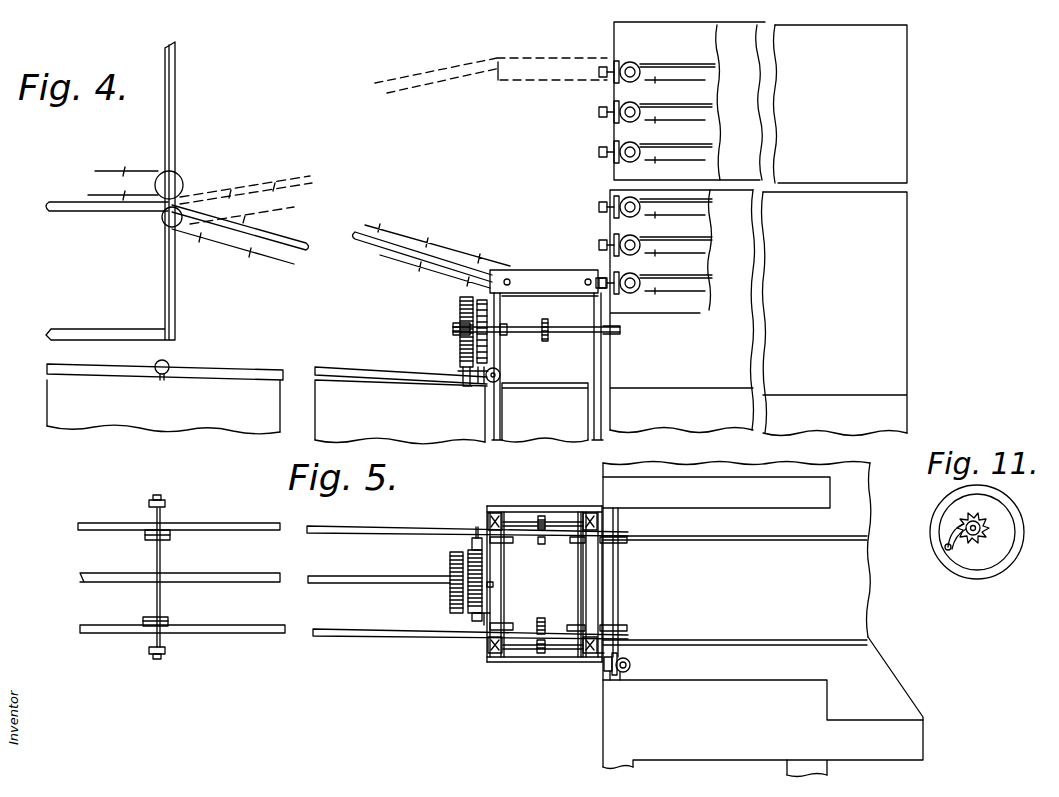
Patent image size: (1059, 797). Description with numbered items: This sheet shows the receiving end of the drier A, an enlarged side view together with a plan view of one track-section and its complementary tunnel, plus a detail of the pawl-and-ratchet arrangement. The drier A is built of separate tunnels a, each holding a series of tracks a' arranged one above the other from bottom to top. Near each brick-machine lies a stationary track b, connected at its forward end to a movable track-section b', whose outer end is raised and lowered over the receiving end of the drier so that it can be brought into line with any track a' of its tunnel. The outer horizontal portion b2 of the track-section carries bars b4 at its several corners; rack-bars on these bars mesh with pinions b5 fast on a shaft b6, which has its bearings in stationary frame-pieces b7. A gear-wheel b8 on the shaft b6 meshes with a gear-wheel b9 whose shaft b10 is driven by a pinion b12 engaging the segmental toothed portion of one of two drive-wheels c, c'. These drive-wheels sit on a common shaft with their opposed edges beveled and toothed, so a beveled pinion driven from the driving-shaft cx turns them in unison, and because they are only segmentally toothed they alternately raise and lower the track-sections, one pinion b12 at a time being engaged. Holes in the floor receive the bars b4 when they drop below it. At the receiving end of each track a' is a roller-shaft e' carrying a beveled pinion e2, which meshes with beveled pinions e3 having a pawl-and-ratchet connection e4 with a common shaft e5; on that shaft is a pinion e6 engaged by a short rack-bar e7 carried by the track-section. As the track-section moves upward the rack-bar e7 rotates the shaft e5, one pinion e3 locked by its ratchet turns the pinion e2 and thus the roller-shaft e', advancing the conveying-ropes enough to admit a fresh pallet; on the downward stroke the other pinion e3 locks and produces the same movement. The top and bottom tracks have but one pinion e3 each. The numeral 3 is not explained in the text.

In FIG. 4, the drier A is at (758, 219).
In FIG. 5, the drier A is at (763, 619).
In FIG. 4, the tunnel a is at (453, 395).
In FIG. 5, the track a' is at (735, 590).
In FIG. 4, the rod 3 is at (677, 95).
In FIG. 4, the stationary track b is at (107, 221).
In FIG. 4, the movable track-section b' is at (332, 243).
In FIG. 5, the movable track-section b' is at (189, 641).
In FIG. 4, the outer horizontal portion b2 is at (531, 277).
In FIG. 4, the bar b4 is at (503, 414).
In FIG. 5, the bar b4 is at (495, 652).
In FIG. 5, the pinion b5 is at (580, 645).
In FIG. 4, the shaft b6 is at (518, 333).
In FIG. 5, the shaft b6 is at (558, 512).
In FIG. 4, the stationary frame-piece b7 is at (612, 331).
In FIG. 5, the stationary frame-piece b7 is at (488, 648).
In FIG. 4, the gear-wheel b8 is at (545, 342).
In FIG. 5, the gear-wheel b8 is at (540, 640).
In FIG. 5, the gear-wheel b9 is at (580, 590).
In FIG. 5, the shaft b10 is at (518, 622).
In FIG. 4, the pinion b12 is at (456, 336).
In FIG. 5, the pinion b12 is at (470, 614).
In FIG. 4, the drive-wheel c is at (446, 332).
In FIG. 5, the drive-wheel c is at (440, 578).
In FIG. 4, the drive-wheel c' is at (462, 323).
In FIG. 5, the drive-wheel c' is at (459, 572).
In FIG. 4, the driving-shaft cx is at (401, 364).
In FIG. 5, the driving-shaft cx is at (265, 590).
In FIG. 5, the roller-shaft e' is at (628, 582).
In FIG. 4, the beveled pinion e2 is at (627, 62).
In FIG. 5, the beveled pinion e2 is at (626, 656).
In FIG. 4, the beveled pinion e3 is at (605, 77).
In FIG. 5, the beveled pinion e3 is at (621, 680).
In FIG. 11, the pawl-and-ratchet connection e4 is at (950, 550).
In FIG. 4, the common shaft e5 is at (600, 208).
In FIG. 5, the common shaft e5 is at (603, 663).
In FIG. 11, the common shaft e5 is at (981, 527).
In FIG. 4, the pinion e6 is at (548, 327).
In FIG. 5, the pinion e6 is at (600, 660).
In FIG. 4, the short rack-bar e7 is at (596, 280).
In FIG. 5, the short rack-bar e7 is at (600, 655).